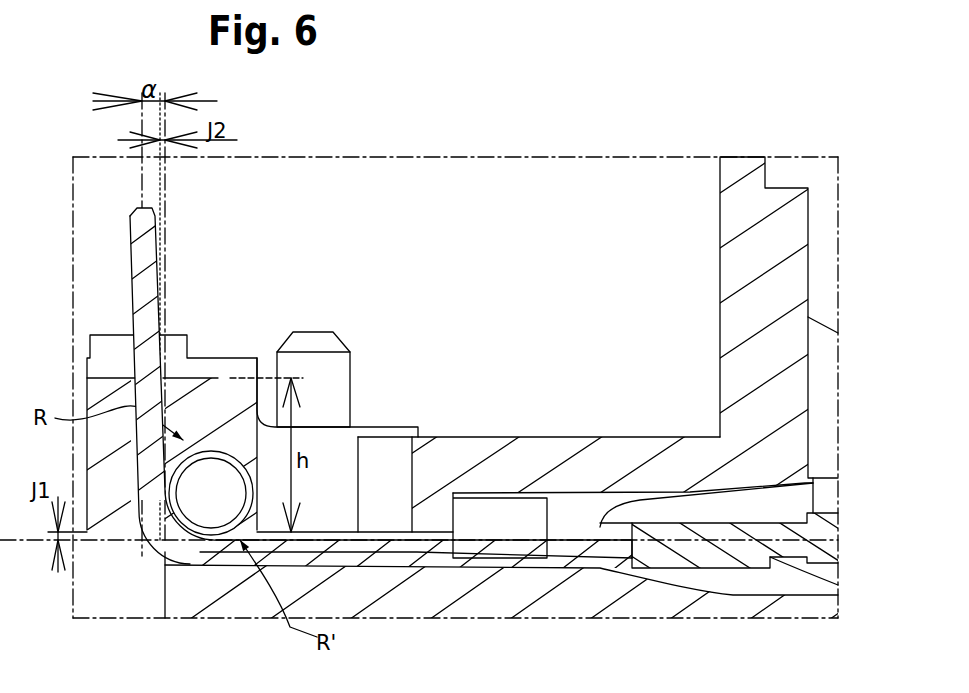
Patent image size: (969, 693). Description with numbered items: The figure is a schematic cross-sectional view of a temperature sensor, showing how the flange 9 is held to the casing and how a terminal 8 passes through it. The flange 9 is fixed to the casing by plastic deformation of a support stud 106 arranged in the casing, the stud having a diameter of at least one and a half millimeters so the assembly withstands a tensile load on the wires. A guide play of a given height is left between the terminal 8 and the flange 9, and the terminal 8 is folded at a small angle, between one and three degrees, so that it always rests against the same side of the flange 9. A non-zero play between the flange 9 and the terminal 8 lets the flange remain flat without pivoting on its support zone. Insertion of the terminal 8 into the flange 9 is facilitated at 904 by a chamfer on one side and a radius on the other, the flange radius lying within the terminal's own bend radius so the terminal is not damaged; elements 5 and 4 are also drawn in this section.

The insertion zone 904 is at (120, 534).
The flange 9 is at (245, 360).
The support stud 106 is at (328, 383).
The terminal 8 is at (373, 522).
The sealing lip 5 is at (660, 517).
The housing wall 4 is at (818, 500).